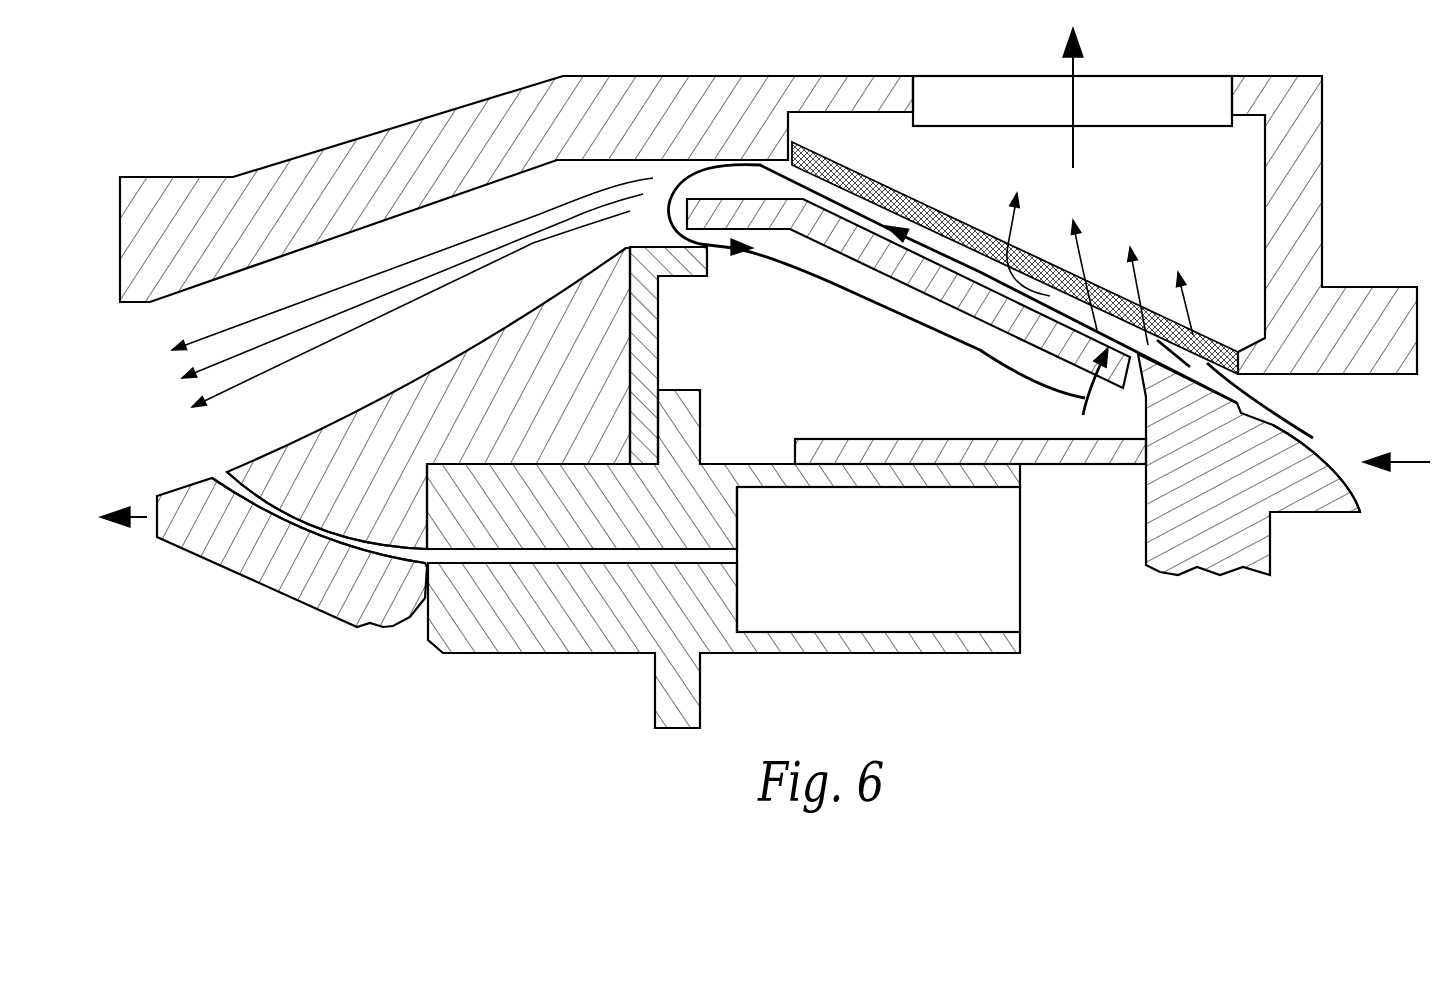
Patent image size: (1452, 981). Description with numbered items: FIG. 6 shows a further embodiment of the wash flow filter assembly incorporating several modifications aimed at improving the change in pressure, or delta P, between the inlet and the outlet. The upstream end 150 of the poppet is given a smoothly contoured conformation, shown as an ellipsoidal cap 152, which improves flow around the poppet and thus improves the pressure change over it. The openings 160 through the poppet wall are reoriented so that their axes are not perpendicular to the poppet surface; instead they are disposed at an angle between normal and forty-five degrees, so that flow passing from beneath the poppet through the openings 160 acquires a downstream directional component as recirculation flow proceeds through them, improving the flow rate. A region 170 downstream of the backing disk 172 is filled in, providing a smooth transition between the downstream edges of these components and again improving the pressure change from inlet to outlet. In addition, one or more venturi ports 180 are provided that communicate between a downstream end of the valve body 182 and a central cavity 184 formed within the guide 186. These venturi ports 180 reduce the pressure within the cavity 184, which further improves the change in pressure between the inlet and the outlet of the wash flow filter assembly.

The upstream end of the poppet 150 is at (1333, 447).
The ellipsoidal cap 152 is at (1358, 503).
The openings through the poppet 160 is at (1092, 356).
The filled-in region downstream of the backing disk 170 is at (565, 345).
The backing disk 172 is at (643, 308).
The venturi port 180 is at (217, 472).
The valve body 182 is at (280, 592).
The central cavity 184 is at (905, 565).
The guide 186 is at (893, 657).